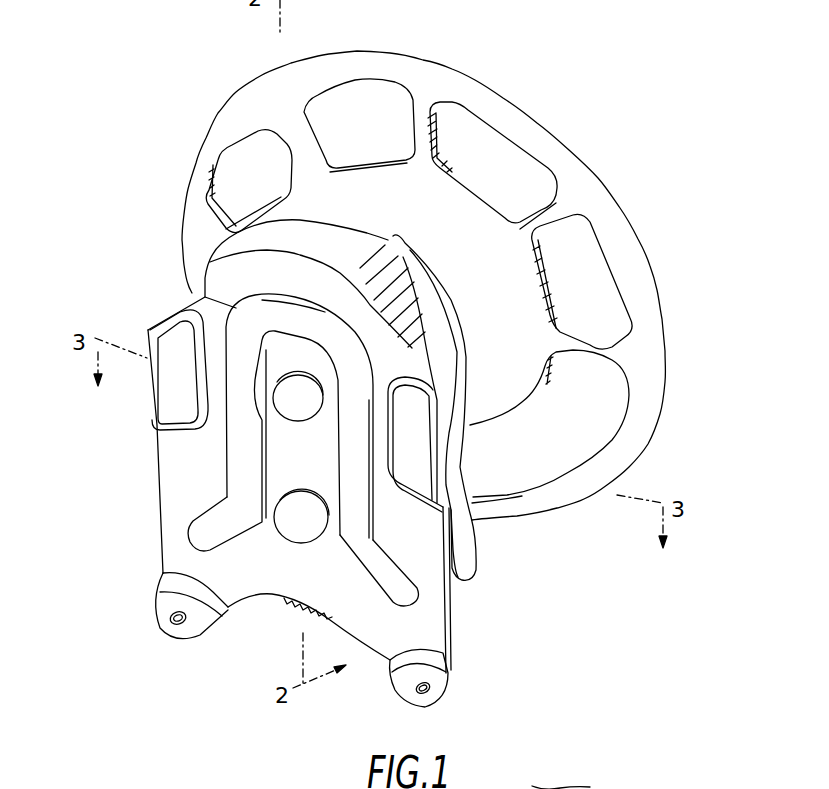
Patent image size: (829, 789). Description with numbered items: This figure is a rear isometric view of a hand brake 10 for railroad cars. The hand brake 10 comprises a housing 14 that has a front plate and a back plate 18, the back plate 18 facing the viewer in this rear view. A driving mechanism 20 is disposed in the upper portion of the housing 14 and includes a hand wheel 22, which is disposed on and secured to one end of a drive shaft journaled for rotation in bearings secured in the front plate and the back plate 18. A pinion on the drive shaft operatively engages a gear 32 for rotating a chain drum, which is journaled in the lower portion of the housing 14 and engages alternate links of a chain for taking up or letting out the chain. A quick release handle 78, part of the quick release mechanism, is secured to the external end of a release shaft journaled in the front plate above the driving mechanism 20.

The hand brake 10 is at (135, 94).
The housing 14 is at (148, 630).
The back plate 18 is at (237, 597).
The driving mechanism 20 is at (587, 154).
The hand wheel 22 is at (468, 72).
The gear 32 is at (307, 606).
The quick release handle 78 is at (463, 358).